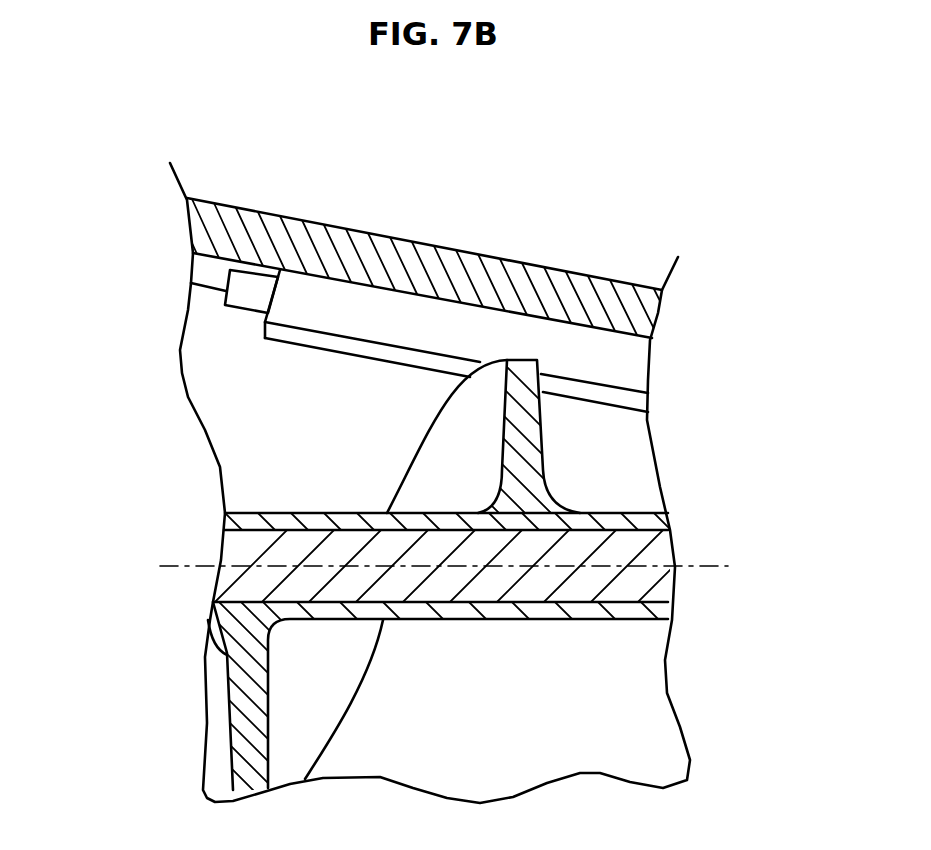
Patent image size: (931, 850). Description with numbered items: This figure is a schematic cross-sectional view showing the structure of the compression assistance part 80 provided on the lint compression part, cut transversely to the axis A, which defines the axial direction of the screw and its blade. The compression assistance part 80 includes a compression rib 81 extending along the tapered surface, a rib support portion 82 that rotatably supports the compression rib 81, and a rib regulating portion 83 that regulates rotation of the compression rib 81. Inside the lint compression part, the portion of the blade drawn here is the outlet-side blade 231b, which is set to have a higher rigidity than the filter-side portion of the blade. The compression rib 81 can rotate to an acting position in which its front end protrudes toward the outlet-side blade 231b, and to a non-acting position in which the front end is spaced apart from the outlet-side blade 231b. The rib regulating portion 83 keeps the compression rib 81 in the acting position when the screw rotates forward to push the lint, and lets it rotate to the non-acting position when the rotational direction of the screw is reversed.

The compression assistance part 80 is at (355, 371).
The compression rib 81 is at (350, 348).
The rib support portion 82 is at (256, 300).
The rib regulating portion 83 is at (348, 302).
The outlet-side blade 231b is at (523, 458).
The axis A is at (712, 566).